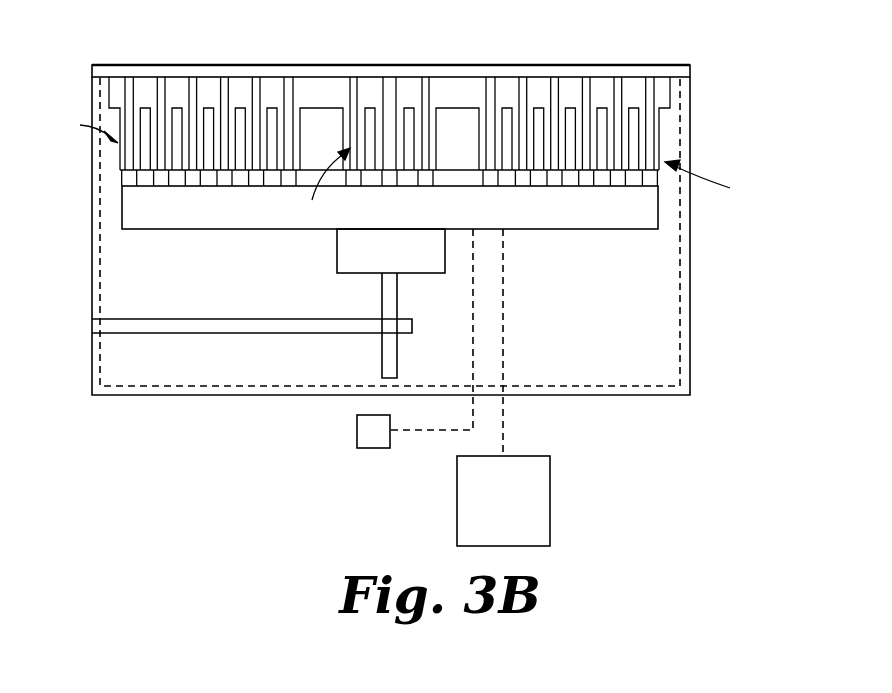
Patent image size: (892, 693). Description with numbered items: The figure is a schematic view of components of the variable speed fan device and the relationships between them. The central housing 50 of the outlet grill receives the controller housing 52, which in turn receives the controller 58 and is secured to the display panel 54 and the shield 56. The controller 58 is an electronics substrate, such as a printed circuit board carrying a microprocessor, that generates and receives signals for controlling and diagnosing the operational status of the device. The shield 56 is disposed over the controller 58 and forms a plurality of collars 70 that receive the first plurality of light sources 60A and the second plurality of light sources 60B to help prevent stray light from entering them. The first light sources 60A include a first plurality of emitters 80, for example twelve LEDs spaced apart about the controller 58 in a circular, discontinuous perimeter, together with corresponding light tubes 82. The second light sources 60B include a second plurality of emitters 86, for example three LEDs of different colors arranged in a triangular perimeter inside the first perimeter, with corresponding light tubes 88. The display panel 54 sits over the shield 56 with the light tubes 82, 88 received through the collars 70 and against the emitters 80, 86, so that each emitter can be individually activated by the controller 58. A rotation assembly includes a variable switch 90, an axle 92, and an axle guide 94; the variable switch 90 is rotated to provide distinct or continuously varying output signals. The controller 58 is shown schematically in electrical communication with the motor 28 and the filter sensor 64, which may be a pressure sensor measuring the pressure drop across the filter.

The motor 28 is at (542, 500).
The central housing 50 is at (693, 274).
The controller housing 52 is at (681, 318).
The display panel 54 is at (602, 72).
The shield 56 is at (670, 93).
The controller 58 is at (130, 207).
The first plurality of discrete light sources 60A is at (401, 155).
The second plurality of discrete light sources 60B is at (322, 186).
The filter sensor 64 is at (365, 433).
The collars 70 is at (250, 112).
The first plurality of emitters 80 is at (252, 178).
The first plurality of light tubes 82 is at (193, 97).
The second plurality of emitters 86 is at (418, 178).
The second plurality of light tubes 88 is at (358, 87).
The variable switch 90 is at (348, 258).
The axle 92 is at (392, 302).
The axle guide 94 is at (173, 323).